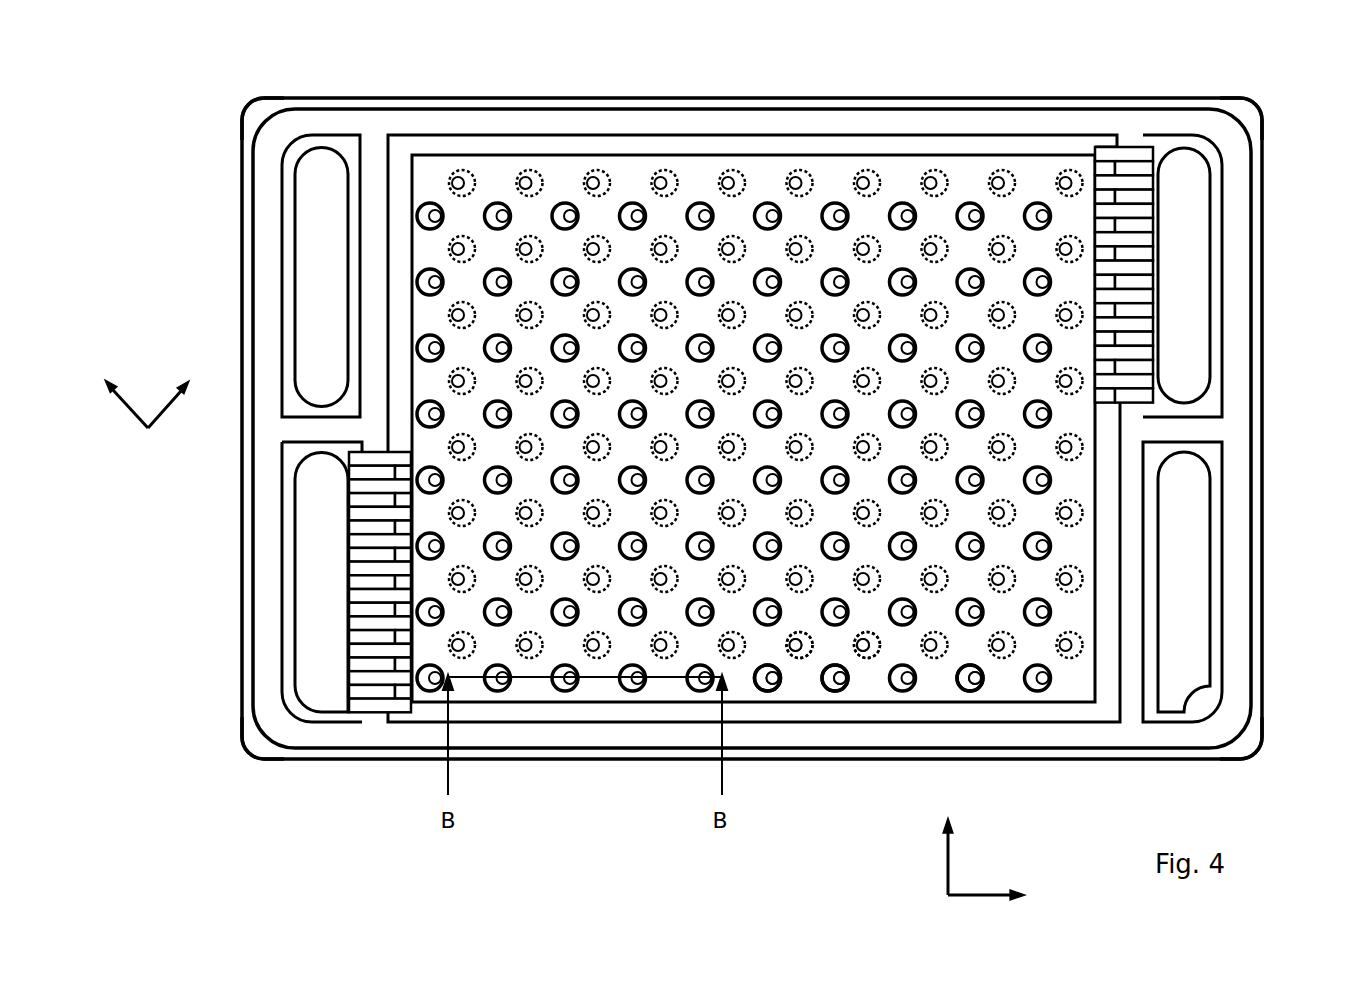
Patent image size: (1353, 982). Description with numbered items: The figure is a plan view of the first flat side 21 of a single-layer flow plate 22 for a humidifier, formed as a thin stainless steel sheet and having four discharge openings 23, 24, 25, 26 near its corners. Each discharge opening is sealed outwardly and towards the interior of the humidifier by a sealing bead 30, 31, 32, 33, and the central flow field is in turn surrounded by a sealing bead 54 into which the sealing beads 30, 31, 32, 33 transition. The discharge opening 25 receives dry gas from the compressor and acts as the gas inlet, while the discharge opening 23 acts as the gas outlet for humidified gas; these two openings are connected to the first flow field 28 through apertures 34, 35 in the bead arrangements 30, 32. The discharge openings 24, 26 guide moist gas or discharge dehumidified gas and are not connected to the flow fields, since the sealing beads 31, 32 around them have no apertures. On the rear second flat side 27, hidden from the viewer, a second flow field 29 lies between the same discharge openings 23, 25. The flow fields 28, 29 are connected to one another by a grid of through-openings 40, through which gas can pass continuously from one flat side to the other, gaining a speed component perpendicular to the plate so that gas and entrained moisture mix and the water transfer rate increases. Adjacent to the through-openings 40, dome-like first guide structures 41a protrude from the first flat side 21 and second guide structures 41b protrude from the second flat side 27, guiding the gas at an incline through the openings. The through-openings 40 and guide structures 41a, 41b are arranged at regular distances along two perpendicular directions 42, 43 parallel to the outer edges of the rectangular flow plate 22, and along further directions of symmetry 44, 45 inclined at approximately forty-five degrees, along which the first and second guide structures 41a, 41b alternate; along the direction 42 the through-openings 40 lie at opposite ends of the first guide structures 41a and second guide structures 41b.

The first flat side 21 is at (888, 145).
The flow plate 22 is at (1265, 418).
The discharge opening 23 is at (315, 600).
The discharge opening 24 is at (1180, 610).
The discharge opening 25 is at (1197, 270).
The discharge opening 26 is at (312, 250).
The second flat side 27 is at (705, 75).
The first flow field 28 is at (1010, 679).
The second flow field 29 is at (1050, 80).
The sealing bead 30 is at (287, 725).
The sealing bead 31 is at (1222, 725).
The sealing bead 32 is at (1193, 122).
The sealing bead 33 is at (292, 128).
The aperture 34 is at (332, 543).
The aperture 35 is at (1167, 305).
The through-openings 40 is at (455, 178).
The first guide structures 41a is at (782, 683).
The second guide structures 41b is at (798, 655).
The direction 42 is at (985, 897).
The direction 43 is at (948, 877).
The direction of symmetry 44 is at (135, 418).
The direction of symmetry 45 is at (163, 415).
The sealing bead 54 is at (831, 120).